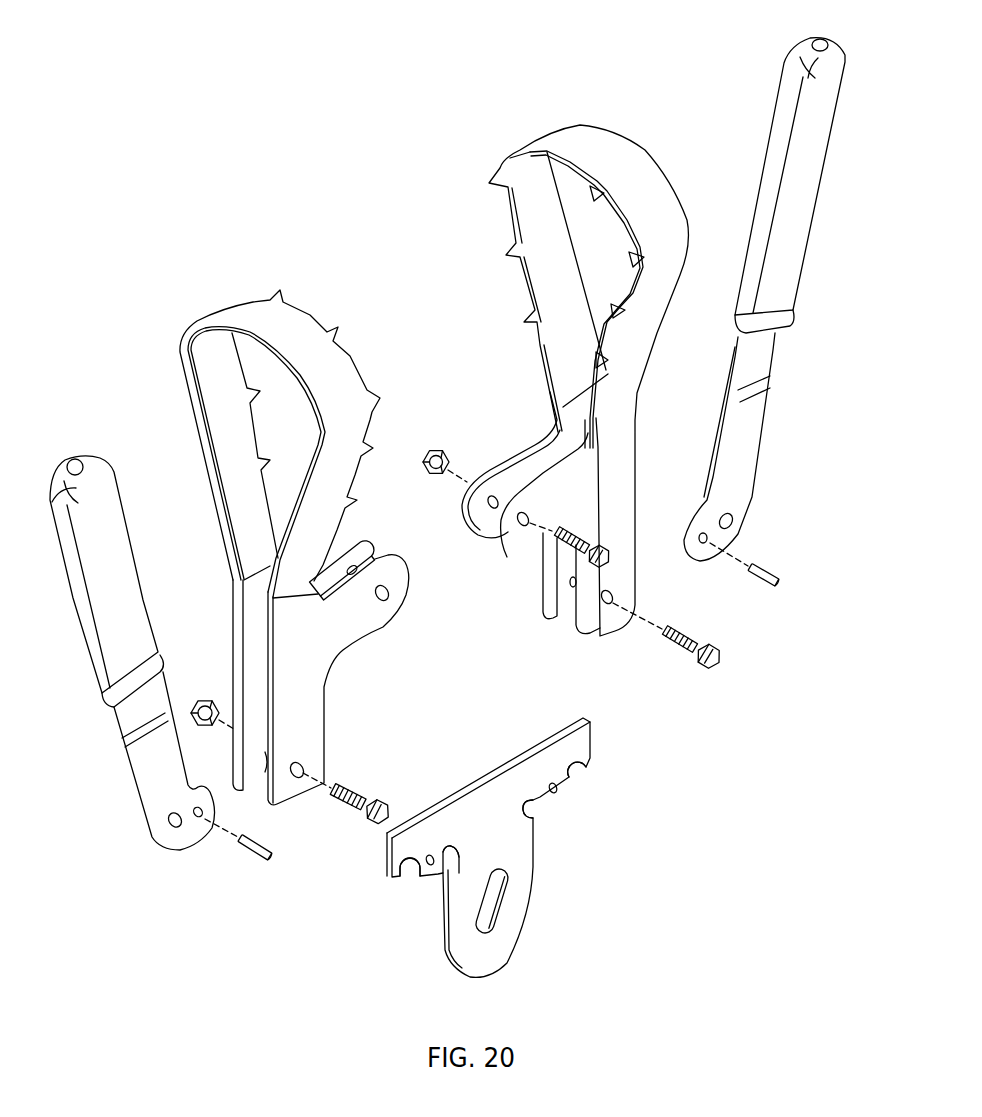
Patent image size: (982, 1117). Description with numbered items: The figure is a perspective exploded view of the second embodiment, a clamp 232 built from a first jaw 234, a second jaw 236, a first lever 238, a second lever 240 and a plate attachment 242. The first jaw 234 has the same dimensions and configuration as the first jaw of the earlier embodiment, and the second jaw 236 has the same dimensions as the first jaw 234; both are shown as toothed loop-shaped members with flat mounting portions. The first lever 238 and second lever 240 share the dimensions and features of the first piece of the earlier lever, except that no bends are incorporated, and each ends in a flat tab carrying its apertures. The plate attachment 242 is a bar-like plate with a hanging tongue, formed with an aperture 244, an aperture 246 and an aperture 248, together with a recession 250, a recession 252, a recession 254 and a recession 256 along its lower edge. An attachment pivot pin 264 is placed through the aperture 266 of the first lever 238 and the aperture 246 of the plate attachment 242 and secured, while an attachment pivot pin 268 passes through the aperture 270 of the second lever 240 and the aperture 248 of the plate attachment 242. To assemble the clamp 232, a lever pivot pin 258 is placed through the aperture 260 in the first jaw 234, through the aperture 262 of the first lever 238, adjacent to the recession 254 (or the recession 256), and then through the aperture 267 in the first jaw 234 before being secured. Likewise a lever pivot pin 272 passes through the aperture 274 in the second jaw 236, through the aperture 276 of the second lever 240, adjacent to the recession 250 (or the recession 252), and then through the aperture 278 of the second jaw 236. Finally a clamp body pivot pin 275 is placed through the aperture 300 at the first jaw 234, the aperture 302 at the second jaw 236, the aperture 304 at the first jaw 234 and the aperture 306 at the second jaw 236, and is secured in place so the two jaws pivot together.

The clamp 232 is at (246, 178).
The first jaw 234 is at (510, 145).
The second jaw 236 is at (202, 308).
The first lever 238 is at (785, 55).
The second lever 240 is at (92, 445).
The plate attachment 242 is at (493, 760).
The aperture 244 is at (503, 903).
The aperture 246 is at (560, 790).
The aperture 248 is at (431, 868).
The recession 250 is at (403, 876).
The recession 252 is at (461, 860).
The recession 254 is at (537, 815).
The recession 256 is at (580, 771).
The lever pivot pin 258 is at (712, 660).
The aperture 260 is at (612, 603).
The aperture 262 is at (735, 525).
The attachment pivot pin 264 is at (765, 582).
The aperture 266 is at (708, 542).
The aperture 267 is at (585, 632).
The attachment pivot pin 268 is at (255, 862).
The aperture 270 is at (203, 823).
The lever pivot pin 272 is at (373, 797).
The aperture 274 is at (304, 772).
The clamp body pivot pin 275 is at (610, 562).
The aperture 276 is at (182, 830).
The aperture 278 is at (267, 772).
The aperture 300 is at (532, 523).
The aperture 302 is at (388, 596).
The aperture 304 is at (505, 518).
The aperture 306 is at (357, 572).